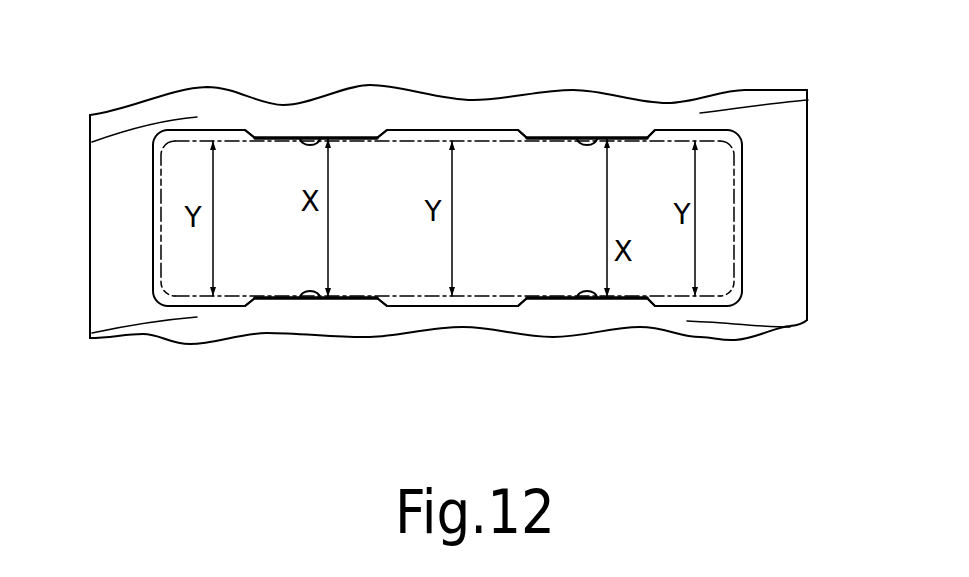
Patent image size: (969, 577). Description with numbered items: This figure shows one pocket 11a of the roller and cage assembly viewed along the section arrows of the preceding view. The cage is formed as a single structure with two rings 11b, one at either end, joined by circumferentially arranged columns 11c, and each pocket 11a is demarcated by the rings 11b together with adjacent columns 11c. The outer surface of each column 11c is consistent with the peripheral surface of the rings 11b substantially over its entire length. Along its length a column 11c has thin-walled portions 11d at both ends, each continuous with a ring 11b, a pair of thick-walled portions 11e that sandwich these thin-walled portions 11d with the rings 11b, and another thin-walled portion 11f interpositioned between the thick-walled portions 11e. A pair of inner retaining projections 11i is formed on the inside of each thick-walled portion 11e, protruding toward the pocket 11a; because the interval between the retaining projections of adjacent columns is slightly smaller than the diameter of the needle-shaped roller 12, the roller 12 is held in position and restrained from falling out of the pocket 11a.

The pocket 11a is at (700, 205).
The ring 11b is at (113, 225).
The column 11c is at (403, 84).
The thin-walled portion 11d is at (90, 138).
The thick-walled portion 11e is at (279, 131).
The thin-walled portion 11f is at (467, 123).
The inner retaining projection 11i is at (314, 144).
The needle-shaped roller 12 is at (507, 277).